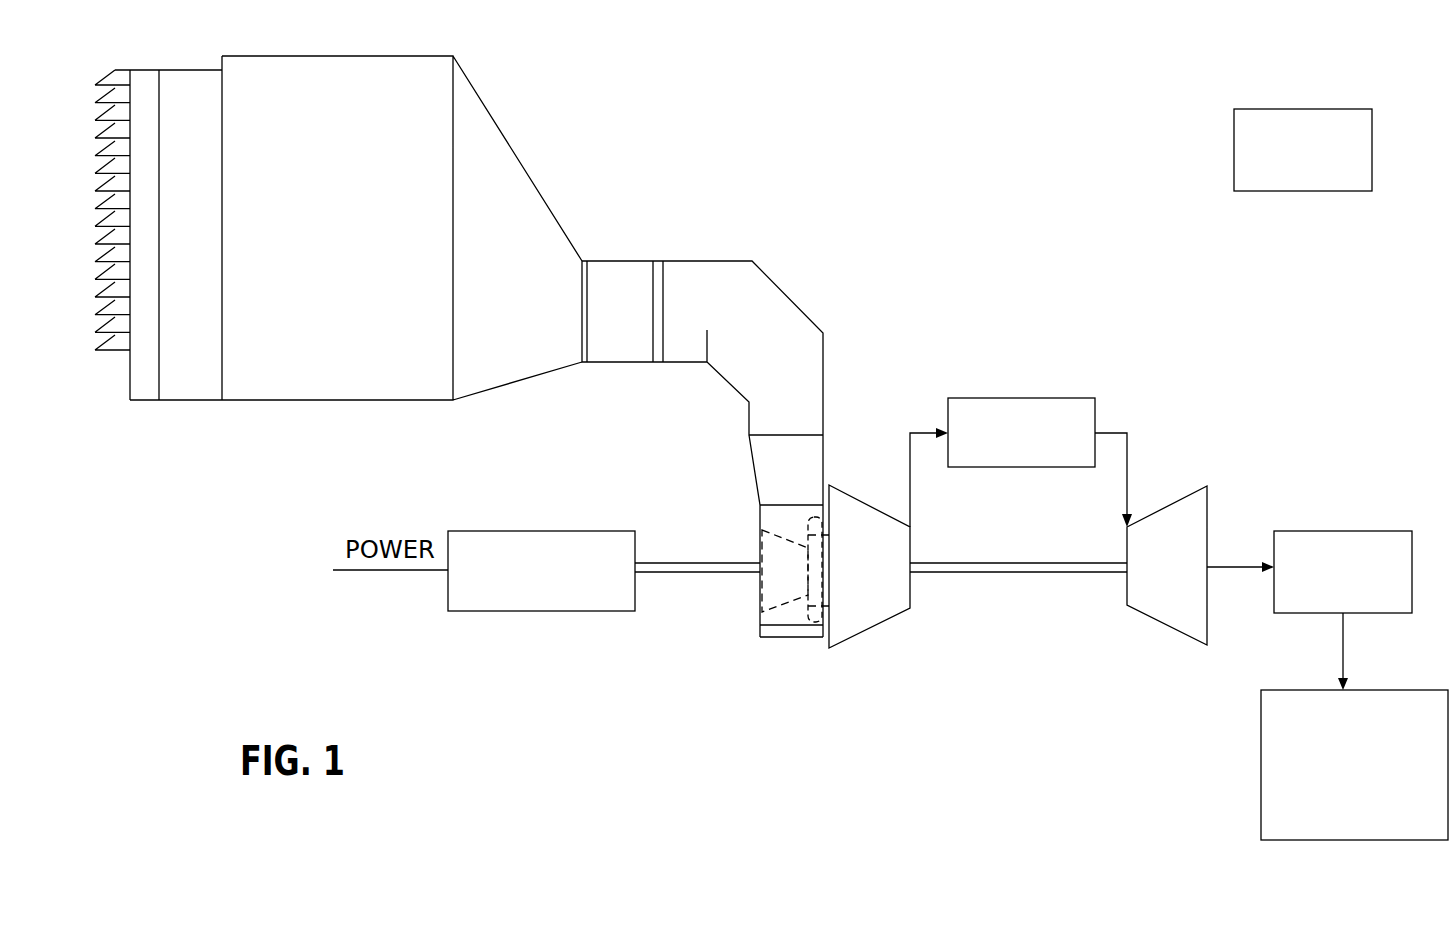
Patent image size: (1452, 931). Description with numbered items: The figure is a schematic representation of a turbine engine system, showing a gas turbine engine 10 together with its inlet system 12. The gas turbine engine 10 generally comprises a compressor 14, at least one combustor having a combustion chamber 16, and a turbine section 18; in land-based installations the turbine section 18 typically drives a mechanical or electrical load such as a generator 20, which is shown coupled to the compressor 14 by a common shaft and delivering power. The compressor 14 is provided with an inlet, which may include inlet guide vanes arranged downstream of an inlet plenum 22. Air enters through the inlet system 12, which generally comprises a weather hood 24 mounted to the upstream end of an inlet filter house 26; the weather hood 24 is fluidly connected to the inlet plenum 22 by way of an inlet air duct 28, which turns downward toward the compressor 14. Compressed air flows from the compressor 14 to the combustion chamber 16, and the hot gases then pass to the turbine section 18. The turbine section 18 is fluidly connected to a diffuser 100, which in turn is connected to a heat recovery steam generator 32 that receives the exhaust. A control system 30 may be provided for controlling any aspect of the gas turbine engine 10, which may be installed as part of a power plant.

The gas turbine engine 10 is at (1282, 376).
The inlet system 12 is at (637, 420).
The compressor 14 is at (883, 598).
The combustion chamber 16 is at (1021, 398).
The turbine section 18 is at (1175, 615).
The generator 20 is at (558, 611).
The inlet plenum 22 is at (770, 519).
The weather hood 24 is at (113, 350).
The inlet filter house 26 is at (190, 385).
The inlet air duct 28 is at (798, 287).
The control system 30 is at (1234, 124).
The heat recovery steam generator 32 is at (1261, 790).
The diffuser 100 is at (1373, 531).